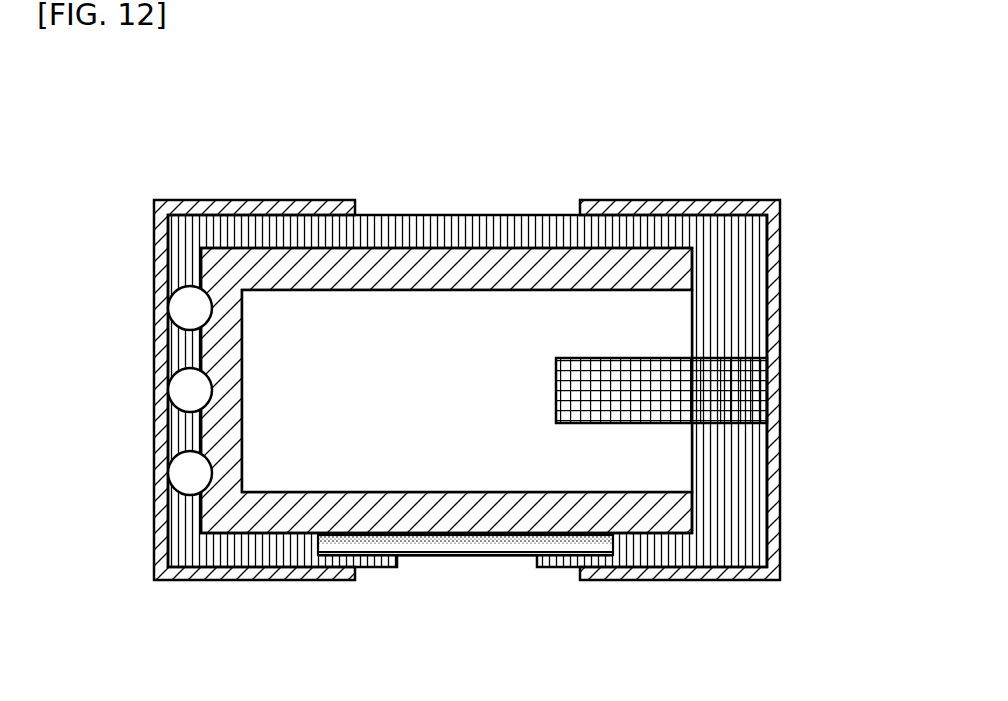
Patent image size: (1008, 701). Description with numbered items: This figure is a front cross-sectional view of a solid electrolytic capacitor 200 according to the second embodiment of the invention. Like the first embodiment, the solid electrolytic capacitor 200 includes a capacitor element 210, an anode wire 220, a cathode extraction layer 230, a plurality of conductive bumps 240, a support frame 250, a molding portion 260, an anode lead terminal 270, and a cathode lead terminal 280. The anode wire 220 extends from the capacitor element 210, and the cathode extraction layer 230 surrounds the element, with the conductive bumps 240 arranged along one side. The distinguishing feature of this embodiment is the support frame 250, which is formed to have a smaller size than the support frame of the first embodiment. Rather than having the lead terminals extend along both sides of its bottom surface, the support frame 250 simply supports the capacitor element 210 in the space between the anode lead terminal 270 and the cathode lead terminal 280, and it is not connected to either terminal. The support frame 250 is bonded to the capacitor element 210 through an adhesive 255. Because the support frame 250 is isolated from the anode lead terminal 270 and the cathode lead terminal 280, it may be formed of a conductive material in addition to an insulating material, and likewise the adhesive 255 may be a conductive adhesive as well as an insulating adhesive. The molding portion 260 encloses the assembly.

The solid electrolytic capacitor 200 is at (463, 361).
The capacitor element 210 is at (410, 313).
The anode wire 220 is at (745, 390).
The cathode extraction layer 230 is at (518, 262).
The conductive bumps 240 is at (183, 389).
The support frame 250 is at (430, 556).
The adhesive 255 is at (518, 541).
The molding portion 260 is at (753, 492).
The anode lead terminal 270 is at (683, 580).
The cathode lead terminal 280 is at (260, 580).